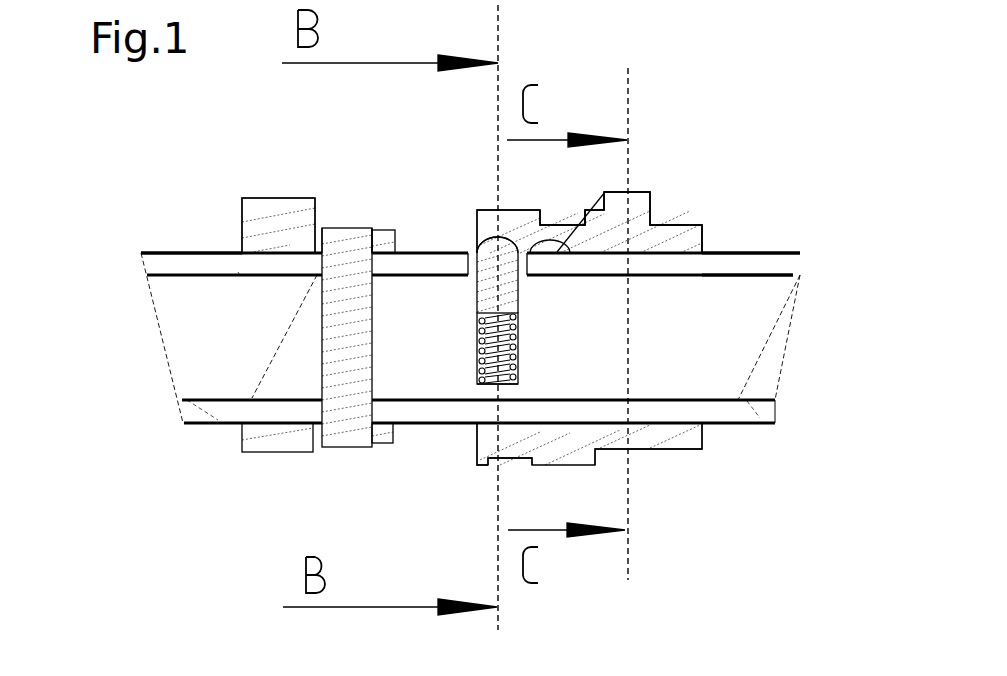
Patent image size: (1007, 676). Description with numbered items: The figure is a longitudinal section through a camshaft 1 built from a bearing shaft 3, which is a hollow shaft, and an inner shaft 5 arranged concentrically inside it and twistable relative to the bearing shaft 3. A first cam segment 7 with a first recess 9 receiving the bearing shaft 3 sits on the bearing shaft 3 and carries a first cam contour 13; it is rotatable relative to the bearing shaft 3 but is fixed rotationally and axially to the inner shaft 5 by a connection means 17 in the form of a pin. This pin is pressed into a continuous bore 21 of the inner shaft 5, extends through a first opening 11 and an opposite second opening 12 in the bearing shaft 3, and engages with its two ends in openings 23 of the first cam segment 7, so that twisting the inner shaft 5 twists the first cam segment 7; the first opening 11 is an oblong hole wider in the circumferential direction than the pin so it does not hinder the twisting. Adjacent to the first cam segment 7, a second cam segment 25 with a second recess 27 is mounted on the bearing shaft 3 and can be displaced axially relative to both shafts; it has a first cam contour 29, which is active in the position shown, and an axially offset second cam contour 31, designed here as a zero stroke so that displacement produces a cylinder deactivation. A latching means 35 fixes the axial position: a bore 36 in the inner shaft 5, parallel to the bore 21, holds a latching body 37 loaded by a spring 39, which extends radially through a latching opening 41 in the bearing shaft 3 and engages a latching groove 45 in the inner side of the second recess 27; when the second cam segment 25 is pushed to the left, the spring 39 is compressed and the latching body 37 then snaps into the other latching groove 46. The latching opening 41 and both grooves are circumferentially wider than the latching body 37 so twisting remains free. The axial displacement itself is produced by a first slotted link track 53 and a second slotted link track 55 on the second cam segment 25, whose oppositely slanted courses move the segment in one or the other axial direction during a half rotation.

The camshaft 1 is at (727, 72).
The bearing shaft 3 is at (153, 262).
The inner shaft 5 is at (167, 325).
The first cam segment 7 is at (298, 213).
The first recess 9 is at (240, 253).
The first opening 11 is at (395, 246).
The second opening 12 is at (317, 414).
The first cam contour 13 is at (273, 196).
The connection means 17 is at (342, 431).
The bore 21 is at (407, 423).
The opening 23 is at (372, 250).
The second cam segment 25 is at (692, 438).
The second recess 27 is at (705, 252).
The first cam contour 29 is at (633, 186).
The second cam contour 31 is at (679, 215).
The latching means 35 is at (537, 346).
The bore 36 is at (522, 370).
The latching body 37 is at (470, 313).
The spring 39 is at (486, 386).
The latching opening 41 is at (471, 258).
The latching groove 45 is at (502, 238).
The latching groove 46 is at (584, 222).
The first slotted link track 53 is at (557, 252).
The second slotted link track 55 is at (517, 466).